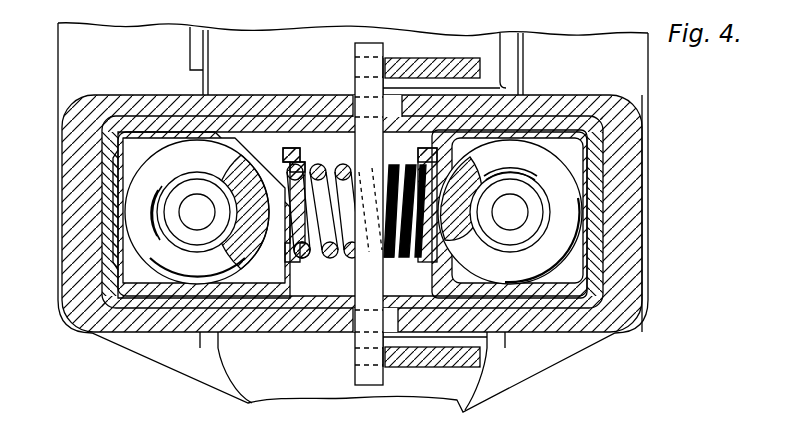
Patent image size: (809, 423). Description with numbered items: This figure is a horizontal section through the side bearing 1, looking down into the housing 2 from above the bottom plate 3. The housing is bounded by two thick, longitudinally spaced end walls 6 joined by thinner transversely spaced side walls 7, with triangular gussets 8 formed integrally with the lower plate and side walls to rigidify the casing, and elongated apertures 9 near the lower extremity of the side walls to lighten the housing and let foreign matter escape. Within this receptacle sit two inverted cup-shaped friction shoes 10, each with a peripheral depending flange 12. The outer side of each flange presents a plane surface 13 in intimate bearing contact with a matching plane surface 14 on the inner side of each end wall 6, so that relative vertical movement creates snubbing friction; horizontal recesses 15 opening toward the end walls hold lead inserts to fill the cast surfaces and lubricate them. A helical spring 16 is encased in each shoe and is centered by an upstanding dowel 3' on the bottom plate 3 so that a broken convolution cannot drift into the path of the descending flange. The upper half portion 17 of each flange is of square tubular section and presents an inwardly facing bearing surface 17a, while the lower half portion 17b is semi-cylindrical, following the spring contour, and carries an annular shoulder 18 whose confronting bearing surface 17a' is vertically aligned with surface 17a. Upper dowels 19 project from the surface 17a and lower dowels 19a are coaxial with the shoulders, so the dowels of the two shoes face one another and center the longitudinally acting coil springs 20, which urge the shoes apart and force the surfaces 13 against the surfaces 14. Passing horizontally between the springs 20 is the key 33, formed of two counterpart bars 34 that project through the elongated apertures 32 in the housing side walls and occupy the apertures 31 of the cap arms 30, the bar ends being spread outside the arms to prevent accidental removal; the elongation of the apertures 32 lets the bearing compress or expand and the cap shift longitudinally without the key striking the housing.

The side bearing 1 is at (650, 183).
The housing 2 is at (648, 303).
The bottom plate 3 is at (353, 223).
The dowels 3' is at (350, 210).
The end walls 6 is at (72, 222).
The side walls 7 is at (128, 98).
The gussets 8 is at (193, 50).
The elongated apertures 9 is at (241, 106).
The friction shoes 10 is at (145, 297).
The depending flange 12 is at (232, 284).
The plane surface 13 is at (102, 188).
The plane surface 14 is at (112, 272).
The recesses 15 is at (112, 248).
The helical spring 16 is at (353, 212).
The upper half portion 17 is at (427, 127).
The bearing surface 17a is at (412, 150).
The bearing surface 17a' is at (315, 153).
The lower half portion 17b is at (306, 262).
The shoulder 18 is at (280, 150).
The upper dowels 19 is at (391, 259).
The lower dowels 19a is at (308, 260).
The helical springs 20 is at (320, 262).
The arms 30 is at (434, 62).
The apertures 31 is at (393, 63).
The elongated apertures 32 is at (394, 100).
The key 33 is at (358, 339).
The bars 34 is at (358, 85).